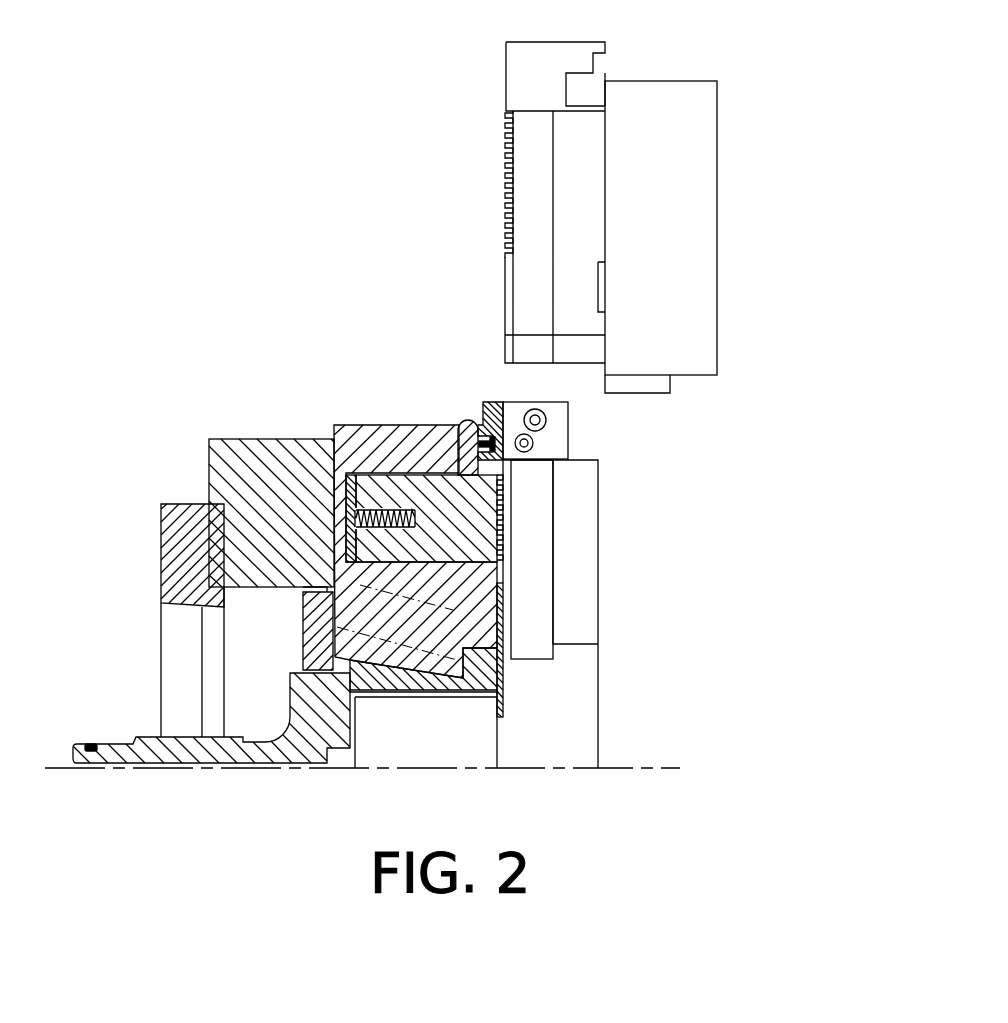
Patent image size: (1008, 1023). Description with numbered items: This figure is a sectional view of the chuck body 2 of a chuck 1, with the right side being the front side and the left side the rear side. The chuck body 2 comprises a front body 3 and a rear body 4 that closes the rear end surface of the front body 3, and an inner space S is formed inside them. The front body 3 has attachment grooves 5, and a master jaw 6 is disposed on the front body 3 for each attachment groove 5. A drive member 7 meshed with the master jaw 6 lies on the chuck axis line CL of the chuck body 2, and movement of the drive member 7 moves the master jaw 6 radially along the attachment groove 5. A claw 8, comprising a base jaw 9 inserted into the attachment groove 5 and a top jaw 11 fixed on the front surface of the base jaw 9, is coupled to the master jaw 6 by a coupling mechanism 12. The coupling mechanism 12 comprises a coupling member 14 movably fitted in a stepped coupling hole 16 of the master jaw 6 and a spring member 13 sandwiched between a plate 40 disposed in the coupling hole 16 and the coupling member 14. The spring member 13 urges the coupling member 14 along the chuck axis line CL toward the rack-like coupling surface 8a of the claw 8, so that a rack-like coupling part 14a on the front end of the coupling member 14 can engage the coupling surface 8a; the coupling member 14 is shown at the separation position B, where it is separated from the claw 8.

The chuck 1 is at (319, 186).
The chuck body 2 is at (260, 432).
The front body 3 is at (305, 447).
The rear body 4 is at (185, 504).
The attachment groove 5 is at (602, 506).
The master jaw 6 is at (349, 428).
The drive member 7 is at (107, 736).
The claw 8 is at (650, 74).
The coupling surface 8a is at (505, 224).
The base jaw 9 is at (505, 132).
The top jaw 11 is at (717, 100).
The coupling mechanism 12 is at (380, 364).
The spring member 13 is at (377, 478).
The coupling member 14 is at (437, 470).
The coupling part 14a is at (503, 538).
The coupling hole 16 is at (407, 476).
The plate 40 is at (345, 478).
The separation position B is at (520, 512).
The inner space S is at (265, 711).
The chuck axis line CL is at (650, 768).